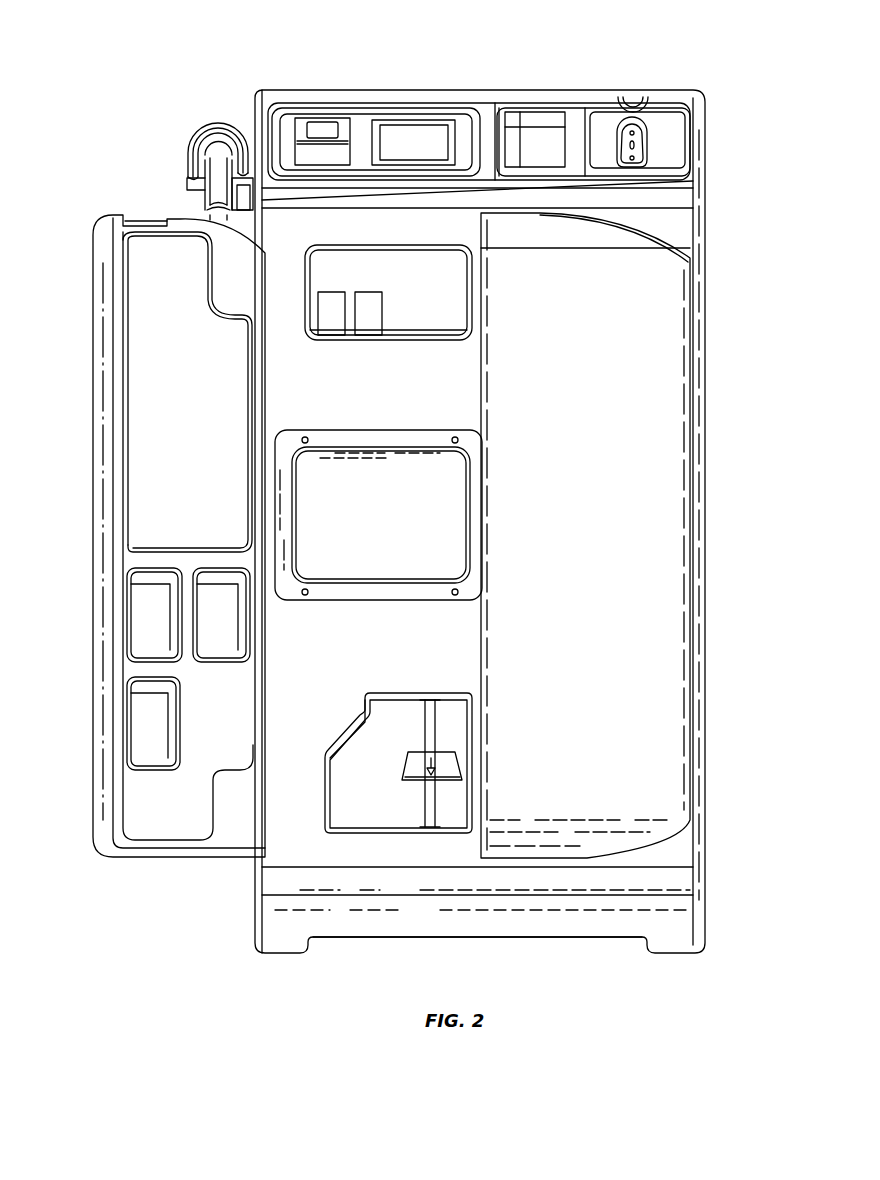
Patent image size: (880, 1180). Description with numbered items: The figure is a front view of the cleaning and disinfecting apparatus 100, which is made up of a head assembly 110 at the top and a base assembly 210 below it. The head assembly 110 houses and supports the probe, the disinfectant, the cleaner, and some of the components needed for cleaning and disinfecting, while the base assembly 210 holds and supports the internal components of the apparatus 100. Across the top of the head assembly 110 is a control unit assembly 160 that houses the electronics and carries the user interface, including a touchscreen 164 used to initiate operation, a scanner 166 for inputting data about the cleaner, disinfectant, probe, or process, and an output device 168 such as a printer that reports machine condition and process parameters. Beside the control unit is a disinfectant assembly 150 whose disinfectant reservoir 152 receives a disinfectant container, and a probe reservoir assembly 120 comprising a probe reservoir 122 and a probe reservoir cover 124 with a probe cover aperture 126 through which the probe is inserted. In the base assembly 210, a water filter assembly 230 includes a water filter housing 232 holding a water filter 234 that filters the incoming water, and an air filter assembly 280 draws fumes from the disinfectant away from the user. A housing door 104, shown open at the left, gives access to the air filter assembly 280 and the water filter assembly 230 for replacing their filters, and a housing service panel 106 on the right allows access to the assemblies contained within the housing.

The apparatus 100 is at (430, 68).
The housing door 104 is at (102, 452).
The housing service panel 106 is at (672, 358).
The head assembly 110 is at (697, 182).
The probe reservoir assembly 120 is at (642, 47).
The probe reservoir 122 is at (657, 157).
The probe reservoir cover 124 is at (673, 97).
The probe cover aperture 126 is at (628, 90).
The disinfectant assembly 150 is at (515, 70).
The disinfectant reservoir 152 is at (532, 118).
The control unit assembly 160 is at (248, 82).
The touchscreen 164 is at (412, 145).
The scanner 166 is at (205, 133).
The output device 168 is at (318, 128).
The base assembly 210 is at (706, 600).
The water filter assembly 230 is at (325, 793).
The water filter housing 232 is at (375, 795).
The water filter 234 is at (457, 788).
The air filter assembly 280 is at (395, 462).